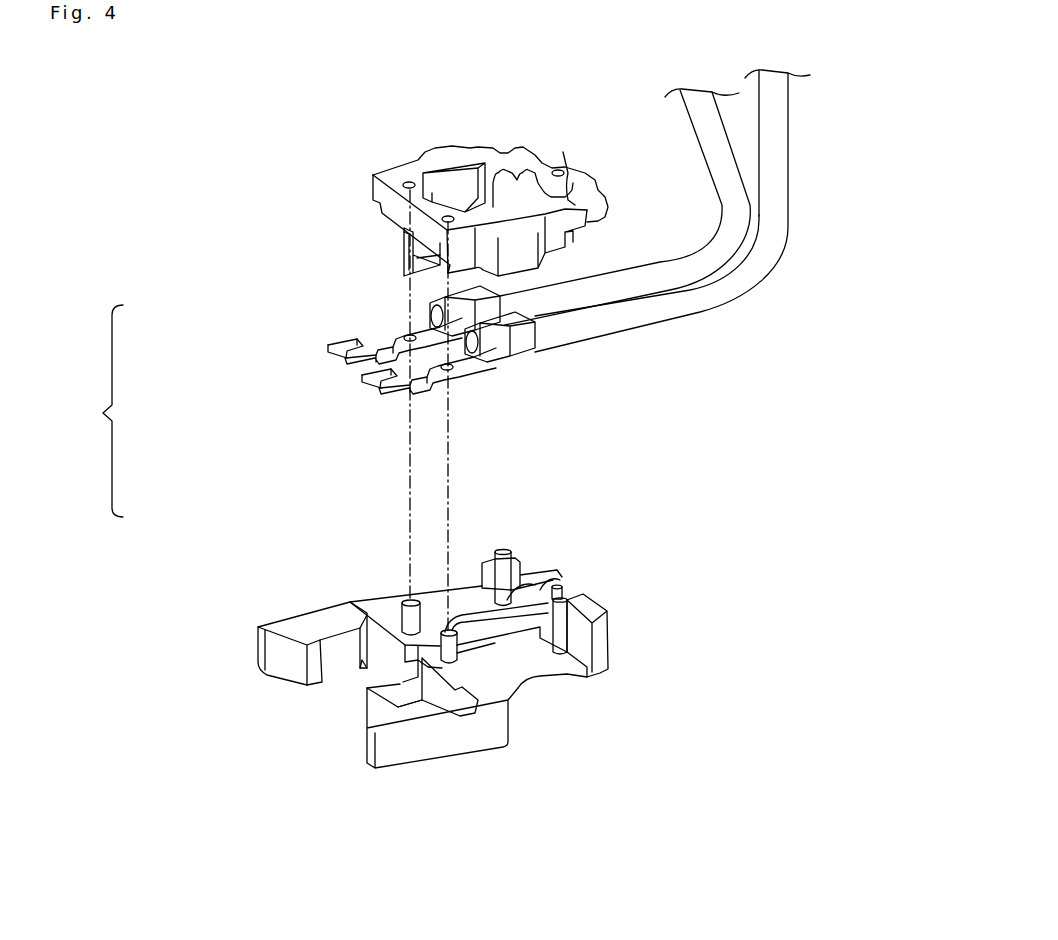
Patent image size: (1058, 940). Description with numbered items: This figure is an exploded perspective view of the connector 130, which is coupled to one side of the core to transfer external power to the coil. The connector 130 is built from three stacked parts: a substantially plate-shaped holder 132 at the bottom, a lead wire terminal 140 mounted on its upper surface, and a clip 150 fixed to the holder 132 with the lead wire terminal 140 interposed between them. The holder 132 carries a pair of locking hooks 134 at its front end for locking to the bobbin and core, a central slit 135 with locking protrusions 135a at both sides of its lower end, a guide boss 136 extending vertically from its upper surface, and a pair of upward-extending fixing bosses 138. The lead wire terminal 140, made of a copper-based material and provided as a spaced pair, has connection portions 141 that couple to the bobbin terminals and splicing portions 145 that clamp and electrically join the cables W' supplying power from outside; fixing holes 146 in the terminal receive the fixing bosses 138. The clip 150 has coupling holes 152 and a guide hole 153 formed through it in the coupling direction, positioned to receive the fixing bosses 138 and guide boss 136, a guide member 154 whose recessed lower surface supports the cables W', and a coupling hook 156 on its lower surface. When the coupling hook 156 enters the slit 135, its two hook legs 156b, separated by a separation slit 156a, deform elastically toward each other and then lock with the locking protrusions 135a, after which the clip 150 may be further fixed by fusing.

The connector 130 is at (90, 411).
The holder 132 is at (262, 592).
The locking hook 134 is at (308, 628).
The slit 135 is at (410, 656).
The locking protrusion 135a is at (405, 655).
The guide boss 136 is at (563, 582).
The fixing boss 138 is at (449, 630).
The lead wire terminal 140 is at (312, 364).
The connection portion 141 is at (328, 348).
The splicing portion 145 is at (522, 346).
The fixing hole 146 is at (410, 334).
The clip 150 is at (322, 191).
The coupling hole 152 is at (410, 180).
The guide hole 153 is at (553, 160).
The guide member 154 is at (590, 187).
The coupling hook 156 is at (396, 259).
The separation slit 156a is at (400, 272).
The hook leg 156b is at (402, 232).
The cable W' is at (776, 276).